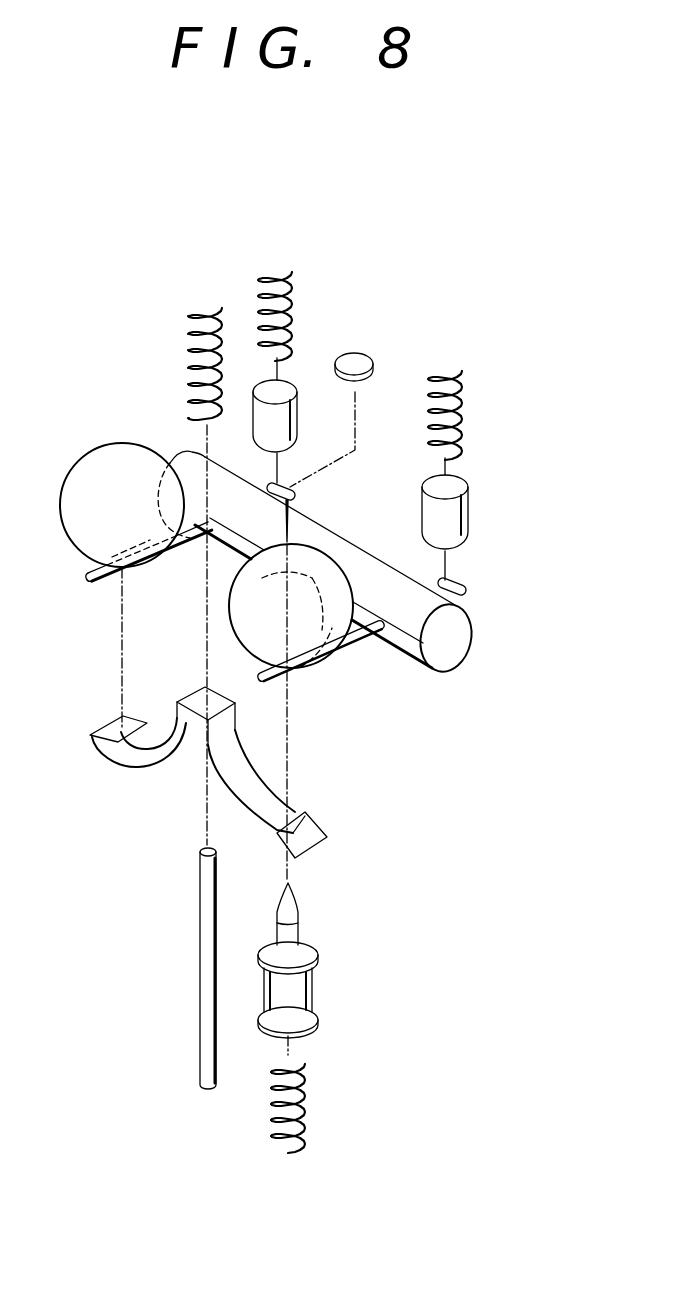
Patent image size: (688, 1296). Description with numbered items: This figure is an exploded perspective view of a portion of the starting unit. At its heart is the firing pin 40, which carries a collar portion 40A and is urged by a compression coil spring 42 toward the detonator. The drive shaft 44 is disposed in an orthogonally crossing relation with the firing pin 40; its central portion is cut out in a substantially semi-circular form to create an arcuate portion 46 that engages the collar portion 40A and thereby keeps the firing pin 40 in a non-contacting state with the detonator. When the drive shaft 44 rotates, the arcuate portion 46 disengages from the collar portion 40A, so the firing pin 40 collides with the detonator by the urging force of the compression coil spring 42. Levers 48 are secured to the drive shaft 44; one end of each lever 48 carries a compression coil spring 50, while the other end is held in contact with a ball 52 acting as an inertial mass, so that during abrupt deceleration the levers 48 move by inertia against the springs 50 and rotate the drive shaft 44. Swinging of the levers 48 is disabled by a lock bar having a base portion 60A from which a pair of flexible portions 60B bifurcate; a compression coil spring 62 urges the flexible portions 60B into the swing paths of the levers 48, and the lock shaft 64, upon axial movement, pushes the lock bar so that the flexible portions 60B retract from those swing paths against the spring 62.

The firing pin 40 is at (314, 983).
The collar portion 40A is at (317, 1026).
The compression coil spring 42 is at (306, 1090).
The drive shaft 44 is at (472, 623).
The arcuate portion 46 is at (313, 532).
The lever 48 is at (87, 578).
The compression coil spring 50 is at (283, 267).
The ball 52 is at (90, 468).
The base portion 60A is at (193, 690).
The flexible portion 60B is at (137, 763).
The compression coil spring 62 is at (200, 302).
The lock shaft 64 is at (200, 1047).